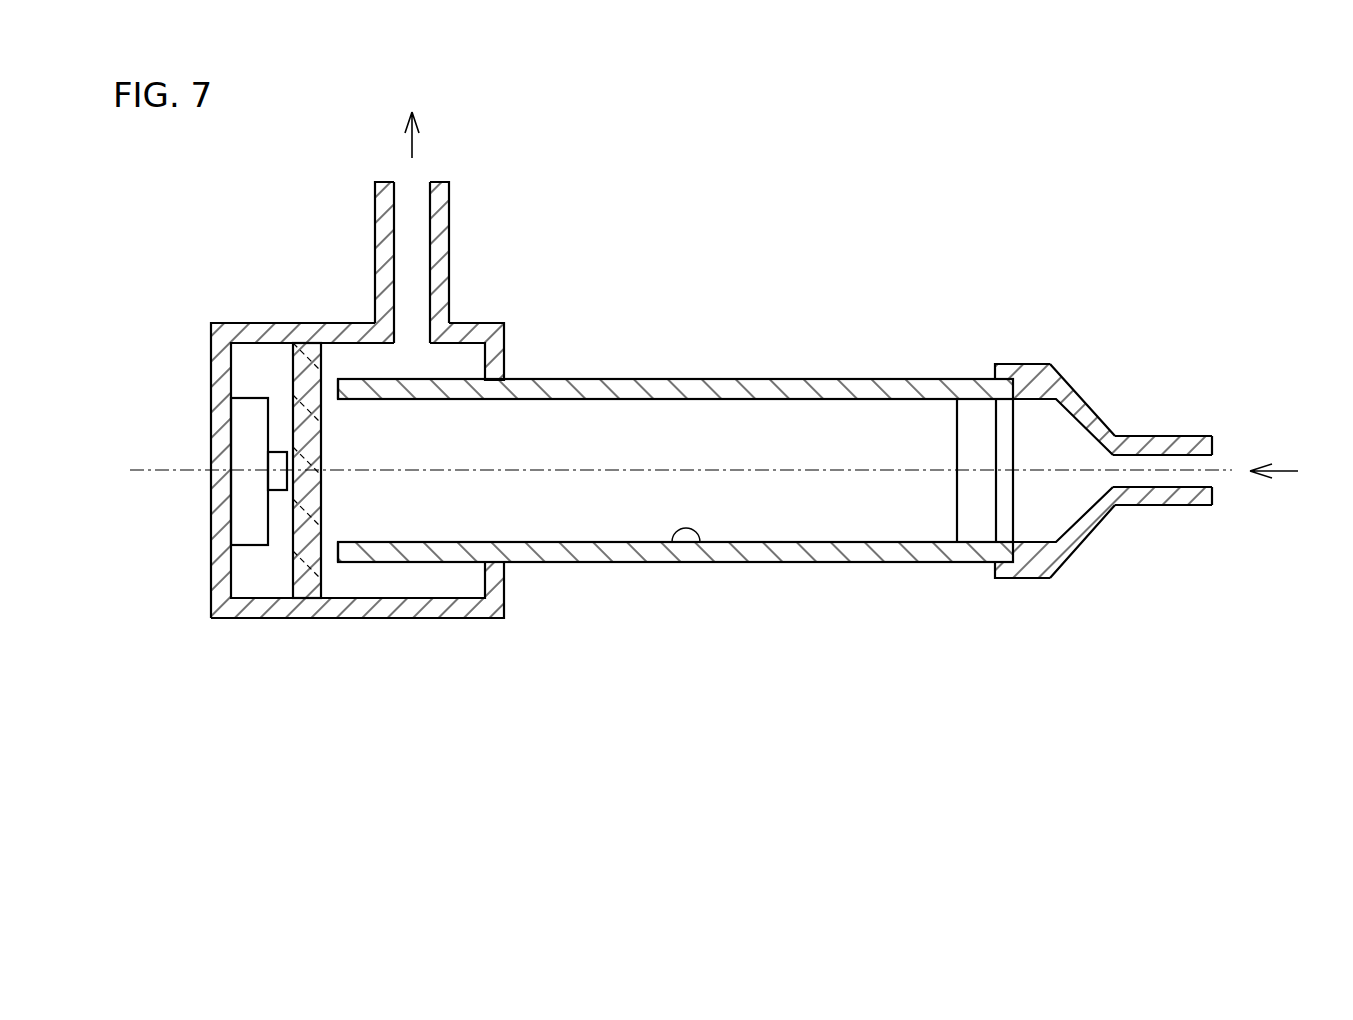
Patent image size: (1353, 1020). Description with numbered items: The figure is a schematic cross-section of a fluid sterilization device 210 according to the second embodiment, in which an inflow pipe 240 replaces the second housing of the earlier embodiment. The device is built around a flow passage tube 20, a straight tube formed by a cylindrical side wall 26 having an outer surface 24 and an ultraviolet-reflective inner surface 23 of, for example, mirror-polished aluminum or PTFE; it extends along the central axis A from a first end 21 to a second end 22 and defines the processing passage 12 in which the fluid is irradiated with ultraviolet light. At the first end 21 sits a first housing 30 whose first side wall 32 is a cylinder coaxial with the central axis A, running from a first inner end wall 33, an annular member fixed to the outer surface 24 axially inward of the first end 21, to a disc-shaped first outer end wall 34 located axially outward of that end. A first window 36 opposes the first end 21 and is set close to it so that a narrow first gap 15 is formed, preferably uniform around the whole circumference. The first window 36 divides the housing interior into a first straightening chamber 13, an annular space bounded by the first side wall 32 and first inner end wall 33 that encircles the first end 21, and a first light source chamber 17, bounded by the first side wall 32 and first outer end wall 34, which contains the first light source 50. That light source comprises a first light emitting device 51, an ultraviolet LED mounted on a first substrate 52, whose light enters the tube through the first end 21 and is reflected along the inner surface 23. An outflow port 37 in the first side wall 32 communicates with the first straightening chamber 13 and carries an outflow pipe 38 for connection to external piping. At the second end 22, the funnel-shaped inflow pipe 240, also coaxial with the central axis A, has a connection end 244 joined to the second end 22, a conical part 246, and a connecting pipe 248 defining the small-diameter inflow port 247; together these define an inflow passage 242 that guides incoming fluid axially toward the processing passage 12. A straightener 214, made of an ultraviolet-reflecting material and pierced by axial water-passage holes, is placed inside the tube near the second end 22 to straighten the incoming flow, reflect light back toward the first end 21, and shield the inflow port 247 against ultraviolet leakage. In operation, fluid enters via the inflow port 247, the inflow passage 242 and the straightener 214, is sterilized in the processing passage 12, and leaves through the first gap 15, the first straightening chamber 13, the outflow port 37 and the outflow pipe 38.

The fluid sterilization device 210 is at (709, 792).
The first housing 30 is at (258, 312).
The first side wall 32 is at (296, 333).
The first gap 15 is at (337, 348).
The outflow pipe 38 is at (440, 202).
The outflow port 37 is at (428, 328).
The first straightening chamber 13 is at (463, 362).
The first light source 50 is at (195, 455).
The first substrate 52 is at (253, 425).
The first light emitting device 51 is at (275, 462).
The first outer end wall 34 is at (220, 512).
The first light source chamber 17 is at (250, 578).
The first window 36 is at (305, 598).
The first inner end wall 33 is at (493, 584).
The flow passage tube 20 is at (675, 479).
The side wall 26 is at (737, 388).
The outer surface 24 is at (635, 563).
The first end 21 is at (348, 548).
The inner surface 23 is at (697, 543).
The processing passage 12 is at (782, 532).
The straightener 214 is at (970, 530).
The second end 22 is at (983, 557).
The central axis A is at (672, 462).
The inflow pipe 240 is at (1140, 451).
The connection end 244 is at (1037, 370).
The conical part 246 is at (1093, 418).
The inflow passage 242 is at (1068, 510).
The connecting pipe 248 is at (1168, 497).
The inflow port 247 is at (1205, 480).